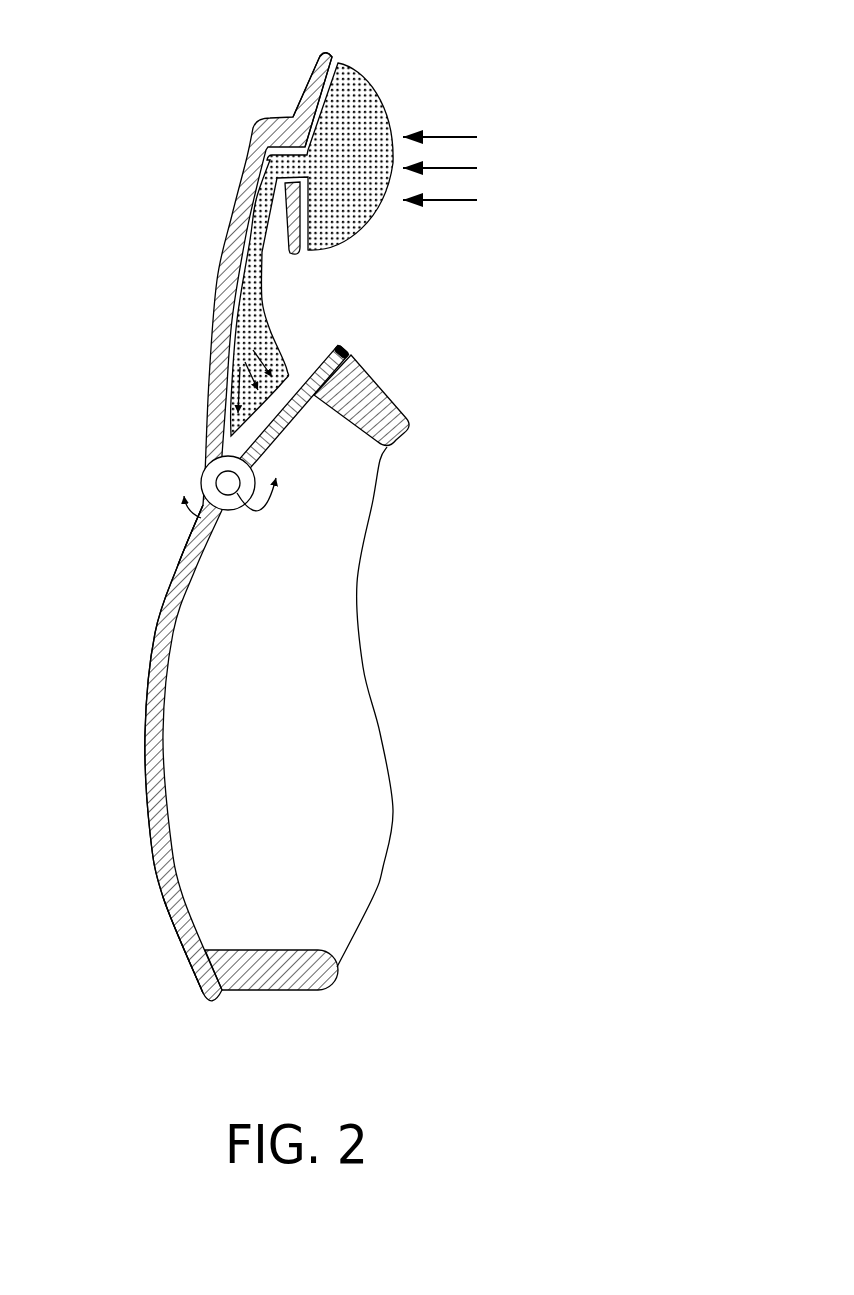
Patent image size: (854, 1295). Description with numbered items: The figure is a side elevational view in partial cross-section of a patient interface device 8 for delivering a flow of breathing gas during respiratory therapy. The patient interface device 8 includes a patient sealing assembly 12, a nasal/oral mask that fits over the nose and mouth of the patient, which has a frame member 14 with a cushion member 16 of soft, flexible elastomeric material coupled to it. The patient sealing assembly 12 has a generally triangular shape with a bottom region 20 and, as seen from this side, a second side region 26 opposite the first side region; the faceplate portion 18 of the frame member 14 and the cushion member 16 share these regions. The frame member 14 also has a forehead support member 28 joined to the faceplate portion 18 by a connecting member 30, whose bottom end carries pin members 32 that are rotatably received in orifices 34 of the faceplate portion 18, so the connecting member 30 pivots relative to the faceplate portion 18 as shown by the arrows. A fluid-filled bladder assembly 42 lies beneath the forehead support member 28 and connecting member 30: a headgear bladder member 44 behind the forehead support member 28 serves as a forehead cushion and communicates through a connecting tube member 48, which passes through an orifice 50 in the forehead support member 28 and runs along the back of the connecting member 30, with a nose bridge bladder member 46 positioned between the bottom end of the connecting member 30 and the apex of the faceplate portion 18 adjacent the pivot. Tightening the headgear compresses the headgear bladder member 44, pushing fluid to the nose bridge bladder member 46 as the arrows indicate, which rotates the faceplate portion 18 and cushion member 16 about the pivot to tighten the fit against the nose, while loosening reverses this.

The patient interface device 8 is at (270, 550).
The patient sealing assembly 12 is at (200, 794).
The frame member 14 is at (132, 749).
The cushion member 16 is at (387, 388).
The faceplate portion 18 is at (145, 735).
The bottom region 20 is at (202, 1007).
The second side region 26 is at (337, 737).
The forehead support member 28 is at (309, 82).
The connecting member 30 is at (217, 267).
The pin members 32 is at (216, 483).
The orifices 34 is at (236, 497).
The bladder assembly 42 is at (349, 227).
The headgear bladder member 44 is at (365, 140).
The nose bridge bladder member 46 is at (286, 416).
The connecting tube member 48 is at (258, 275).
The orifice 50 is at (305, 180).